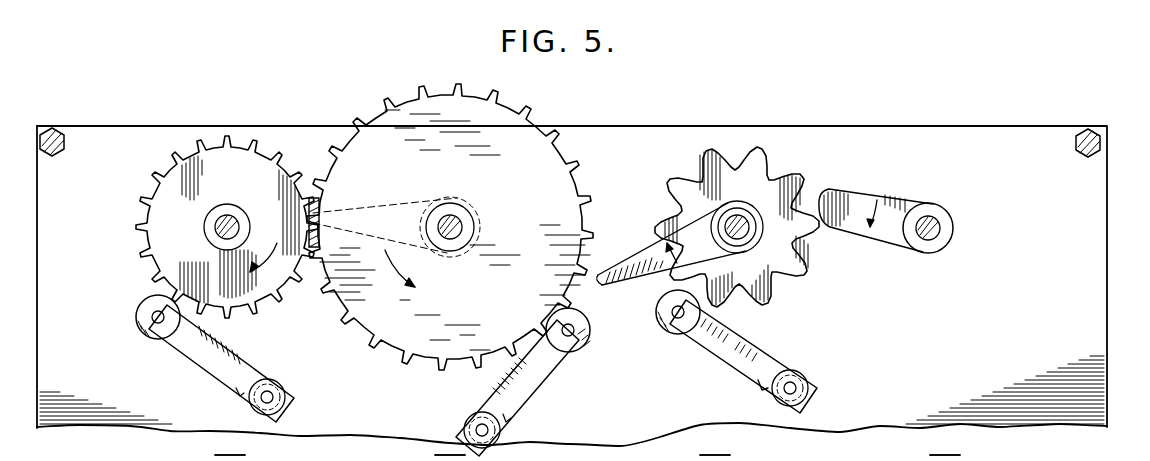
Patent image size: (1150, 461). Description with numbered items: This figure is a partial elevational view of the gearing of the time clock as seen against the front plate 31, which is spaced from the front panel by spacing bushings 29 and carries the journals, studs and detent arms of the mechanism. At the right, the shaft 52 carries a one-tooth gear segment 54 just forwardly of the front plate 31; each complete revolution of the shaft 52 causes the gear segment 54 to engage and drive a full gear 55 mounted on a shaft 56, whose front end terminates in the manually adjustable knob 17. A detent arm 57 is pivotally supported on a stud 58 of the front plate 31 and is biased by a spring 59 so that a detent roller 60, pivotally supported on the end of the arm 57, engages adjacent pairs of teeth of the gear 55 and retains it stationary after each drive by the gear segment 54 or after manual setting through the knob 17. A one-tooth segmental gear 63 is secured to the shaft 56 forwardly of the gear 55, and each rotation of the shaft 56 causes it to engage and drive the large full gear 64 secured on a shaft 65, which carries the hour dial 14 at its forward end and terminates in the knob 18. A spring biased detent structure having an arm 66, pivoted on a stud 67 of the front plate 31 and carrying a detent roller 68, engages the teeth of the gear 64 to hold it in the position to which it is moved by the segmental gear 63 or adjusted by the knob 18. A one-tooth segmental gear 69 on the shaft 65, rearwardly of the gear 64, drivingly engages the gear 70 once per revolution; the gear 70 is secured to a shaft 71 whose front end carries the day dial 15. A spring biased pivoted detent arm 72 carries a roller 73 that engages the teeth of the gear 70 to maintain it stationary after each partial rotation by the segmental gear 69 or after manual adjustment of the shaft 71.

The spacing bushings 29 is at (52, 132).
The front plate 31 is at (1095, 318).
The shaft 52 is at (937, 222).
The one-tooth gear segment 54 is at (858, 200).
The full gear 55 is at (790, 170).
The shaft 56 is at (736, 218).
The detent arm 57 is at (718, 348).
The stud 58 is at (800, 388).
The spring 59 is at (757, 393).
The detent roller 60 is at (672, 332).
The one-tooth segmental gear 63 is at (626, 258).
The full gear 64 is at (540, 128).
The shaft 65 is at (455, 220).
The arm 66 is at (528, 395).
The stud 67 is at (470, 420).
The detent roller 68 is at (587, 345).
The one-tooth segmental gear 69 is at (363, 208).
The gear 70 is at (160, 190).
The shaft 71 is at (235, 218).
The detent arm 72 is at (203, 360).
The roller 73 is at (141, 328).
The hour dial 14 is at (504, 455).
The day dial 15 is at (268, 455).
The manually adjustable knob 17 is at (767, 455).
The knob 18 is at (989, 455).